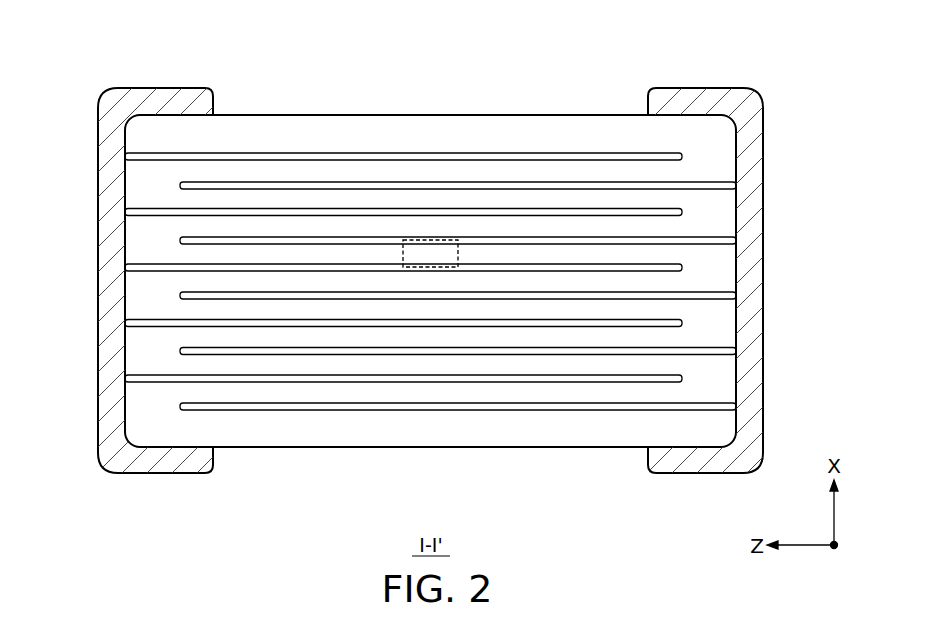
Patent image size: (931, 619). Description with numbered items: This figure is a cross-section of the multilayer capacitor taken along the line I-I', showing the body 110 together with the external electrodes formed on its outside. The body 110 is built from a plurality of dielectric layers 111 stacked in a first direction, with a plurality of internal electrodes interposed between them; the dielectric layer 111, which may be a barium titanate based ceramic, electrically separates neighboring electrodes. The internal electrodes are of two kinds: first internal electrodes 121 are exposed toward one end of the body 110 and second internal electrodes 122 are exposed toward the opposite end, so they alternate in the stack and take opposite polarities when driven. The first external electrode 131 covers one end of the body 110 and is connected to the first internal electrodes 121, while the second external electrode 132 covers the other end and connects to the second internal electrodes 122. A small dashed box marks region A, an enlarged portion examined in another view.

The body 110 is at (300, 106).
The dielectric layer 111 is at (205, 196).
The first internal electrode 121 is at (440, 153).
The second internal electrode 122 is at (515, 182).
The first external electrode 131 is at (156, 100).
The second external electrode 132 is at (697, 100).
The region A is at (437, 267).